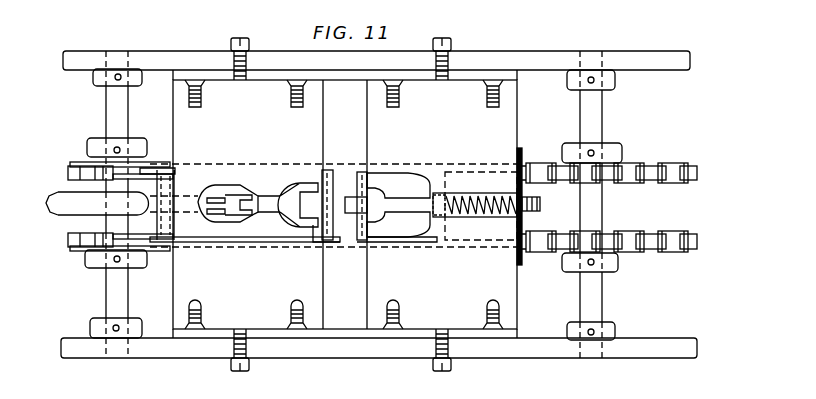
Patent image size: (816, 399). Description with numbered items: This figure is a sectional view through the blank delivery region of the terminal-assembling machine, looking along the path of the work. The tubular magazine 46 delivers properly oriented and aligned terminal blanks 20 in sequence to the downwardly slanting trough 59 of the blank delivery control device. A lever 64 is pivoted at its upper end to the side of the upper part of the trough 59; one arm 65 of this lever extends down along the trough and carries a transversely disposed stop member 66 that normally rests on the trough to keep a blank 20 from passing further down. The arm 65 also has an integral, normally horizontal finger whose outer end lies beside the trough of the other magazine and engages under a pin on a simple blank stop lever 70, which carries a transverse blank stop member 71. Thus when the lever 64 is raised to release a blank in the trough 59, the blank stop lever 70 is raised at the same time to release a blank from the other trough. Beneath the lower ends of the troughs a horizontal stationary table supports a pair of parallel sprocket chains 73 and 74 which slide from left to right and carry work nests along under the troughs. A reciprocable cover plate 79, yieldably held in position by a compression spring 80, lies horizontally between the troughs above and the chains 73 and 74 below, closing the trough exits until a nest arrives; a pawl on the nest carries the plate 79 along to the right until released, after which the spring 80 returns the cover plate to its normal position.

The terminal blank 20 is at (232, 197).
The tubular magazine 46 is at (65, 212).
The trough 59 is at (200, 180).
The lever 64 is at (168, 245).
The arm 65 is at (226, 243).
The stop member 66 is at (327, 228).
The blank stop lever 70 is at (432, 243).
The blank stop member 71 is at (362, 235).
The sprocket chain 73 is at (72, 163).
The sprocket chain 74 is at (78, 246).
The cover plate 79 is at (446, 187).
The compression spring 80 is at (497, 205).